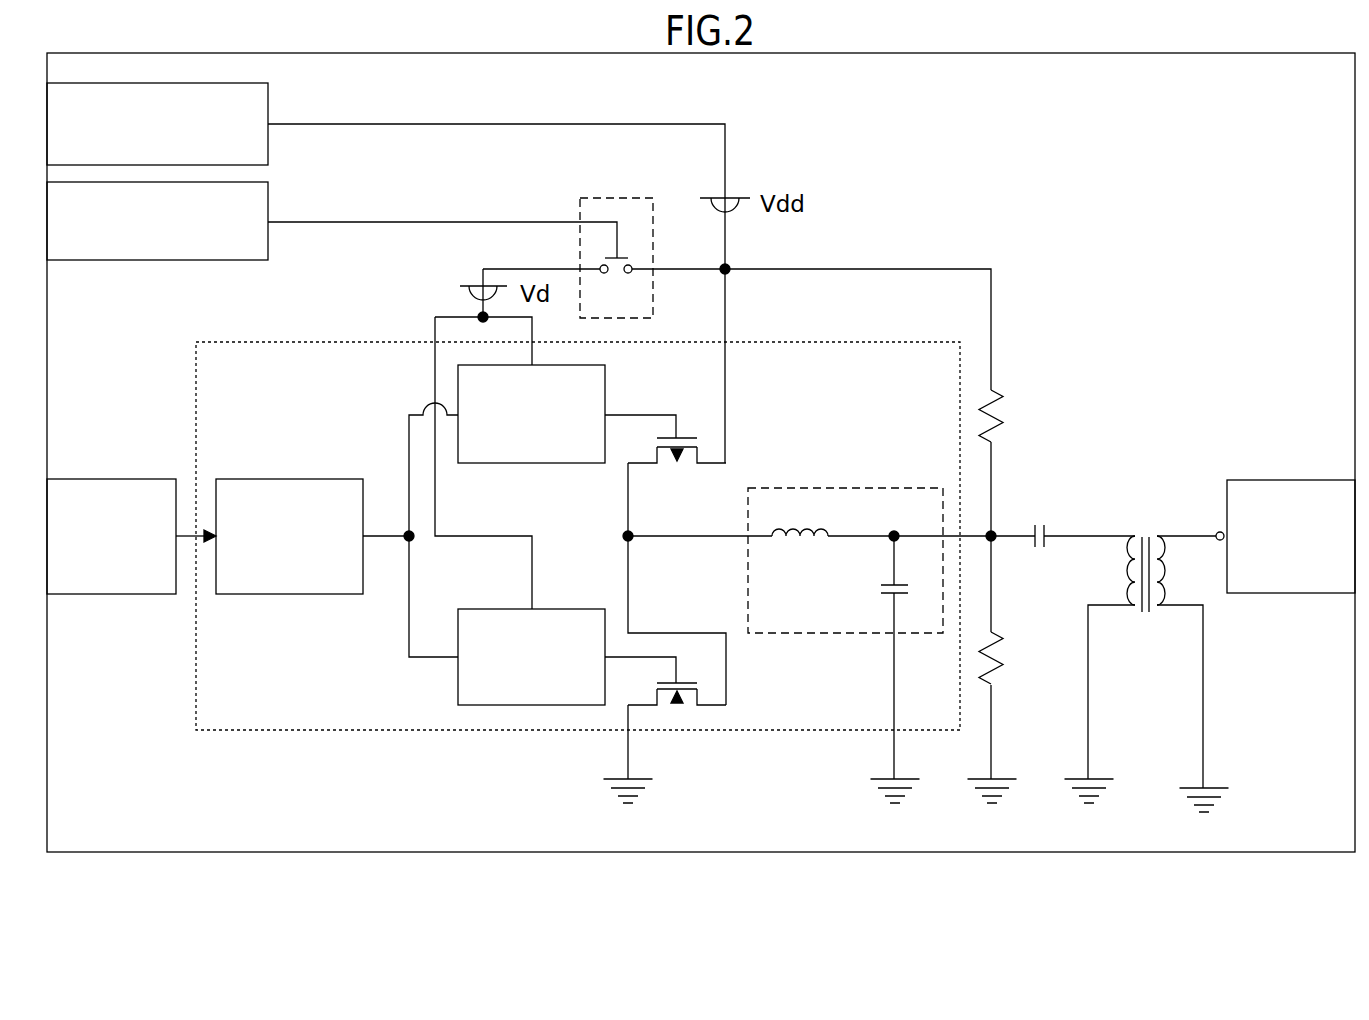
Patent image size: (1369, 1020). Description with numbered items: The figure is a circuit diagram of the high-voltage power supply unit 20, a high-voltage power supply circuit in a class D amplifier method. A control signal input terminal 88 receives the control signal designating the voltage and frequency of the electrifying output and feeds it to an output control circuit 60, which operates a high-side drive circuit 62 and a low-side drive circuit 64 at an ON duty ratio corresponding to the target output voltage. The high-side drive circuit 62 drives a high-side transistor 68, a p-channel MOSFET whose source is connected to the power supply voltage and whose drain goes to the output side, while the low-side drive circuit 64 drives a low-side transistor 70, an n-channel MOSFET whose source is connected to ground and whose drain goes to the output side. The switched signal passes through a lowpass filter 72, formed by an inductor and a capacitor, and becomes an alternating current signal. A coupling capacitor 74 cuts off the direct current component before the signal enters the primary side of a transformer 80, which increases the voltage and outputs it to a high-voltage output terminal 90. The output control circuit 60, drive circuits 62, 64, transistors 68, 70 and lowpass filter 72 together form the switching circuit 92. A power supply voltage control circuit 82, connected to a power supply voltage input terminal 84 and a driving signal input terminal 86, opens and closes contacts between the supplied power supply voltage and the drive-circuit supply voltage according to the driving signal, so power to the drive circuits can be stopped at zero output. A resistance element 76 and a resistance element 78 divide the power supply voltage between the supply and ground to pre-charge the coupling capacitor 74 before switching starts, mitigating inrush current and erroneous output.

The high-voltage power supply unit 20 is at (1345, 92).
The output control circuit 60 is at (286, 479).
The high-side drive circuit 62 is at (607, 385).
The low-side drive circuit 64 is at (573, 609).
The high-side transistor 68 is at (688, 420).
The low-side transistor 70 is at (692, 722).
The lowpass filter 72 is at (874, 488).
The coupling capacitor 74 is at (1035, 514).
The resistance element 76 is at (1000, 380).
The resistance element 78 is at (1000, 622).
The transformer 80 is at (1144, 528).
The power supply voltage control circuit 82 is at (612, 198).
The power supply voltage input terminal 84 is at (270, 91).
The driving signal input terminal 86 is at (270, 189).
The control signal input terminal 88 is at (106, 479).
The high-voltage output terminal 90 is at (1289, 480).
The switching circuit 92 is at (351, 342).